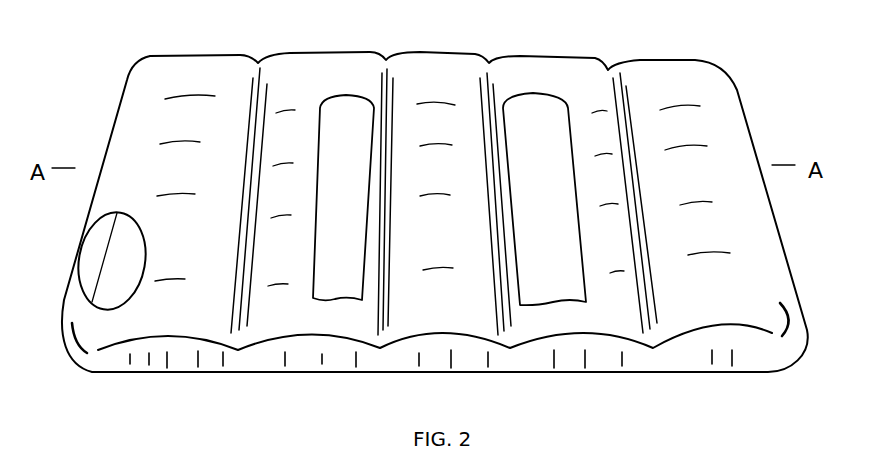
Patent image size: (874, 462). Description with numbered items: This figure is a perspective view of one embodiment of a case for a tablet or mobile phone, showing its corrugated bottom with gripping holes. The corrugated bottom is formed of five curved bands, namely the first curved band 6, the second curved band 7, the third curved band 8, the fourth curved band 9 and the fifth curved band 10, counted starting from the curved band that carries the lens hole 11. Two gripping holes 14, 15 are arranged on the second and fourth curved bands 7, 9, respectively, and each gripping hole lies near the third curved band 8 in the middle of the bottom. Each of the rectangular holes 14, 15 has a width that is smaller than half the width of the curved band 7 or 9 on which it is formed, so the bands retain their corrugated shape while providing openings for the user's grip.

The first curved band 6 is at (190, 88).
The second curved band 7 is at (328, 77).
The third curved band 8 is at (442, 75).
The fourth curved band 9 is at (568, 82).
The fifth curved band 10 is at (673, 85).
The lens hole 11 is at (108, 275).
The gripping hole 14 is at (333, 273).
The gripping hole 15 is at (553, 273).